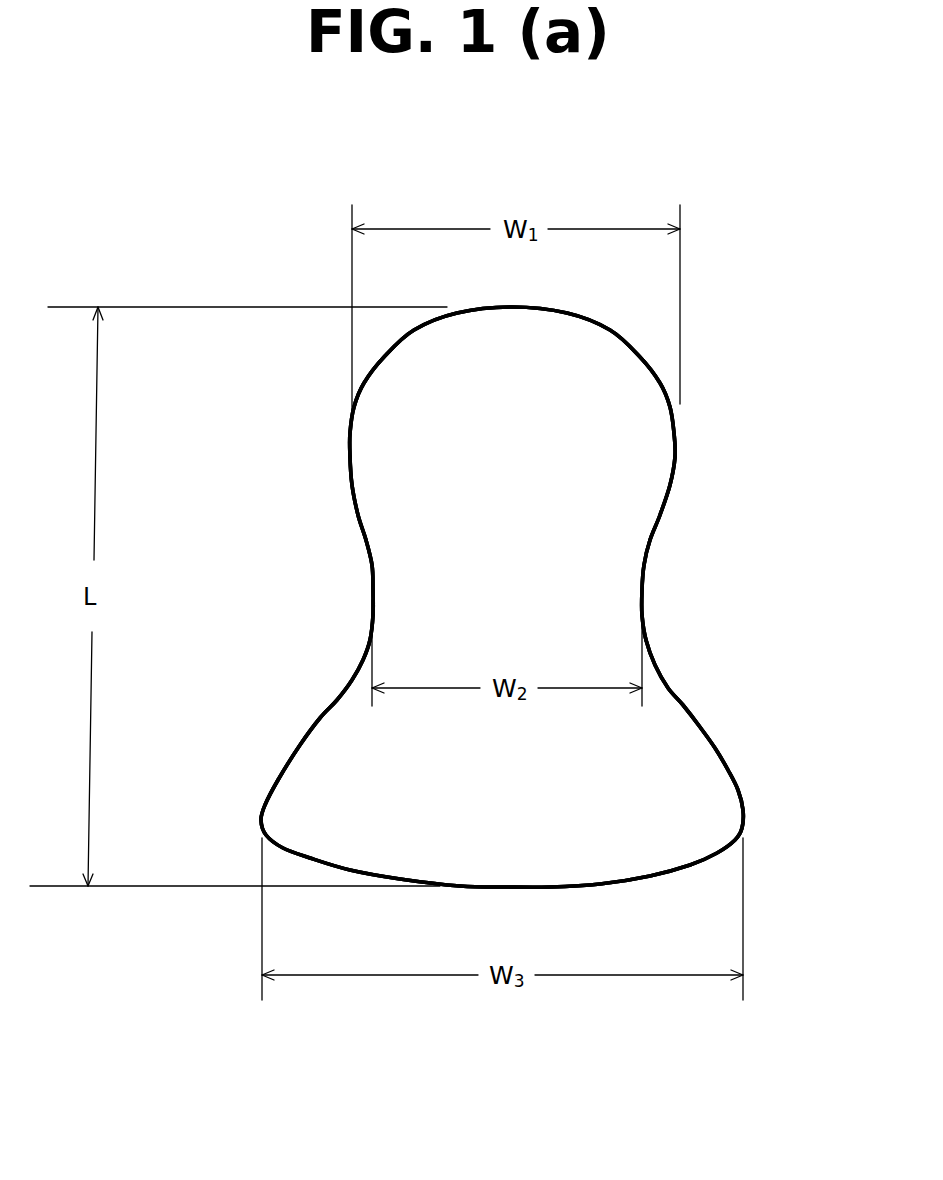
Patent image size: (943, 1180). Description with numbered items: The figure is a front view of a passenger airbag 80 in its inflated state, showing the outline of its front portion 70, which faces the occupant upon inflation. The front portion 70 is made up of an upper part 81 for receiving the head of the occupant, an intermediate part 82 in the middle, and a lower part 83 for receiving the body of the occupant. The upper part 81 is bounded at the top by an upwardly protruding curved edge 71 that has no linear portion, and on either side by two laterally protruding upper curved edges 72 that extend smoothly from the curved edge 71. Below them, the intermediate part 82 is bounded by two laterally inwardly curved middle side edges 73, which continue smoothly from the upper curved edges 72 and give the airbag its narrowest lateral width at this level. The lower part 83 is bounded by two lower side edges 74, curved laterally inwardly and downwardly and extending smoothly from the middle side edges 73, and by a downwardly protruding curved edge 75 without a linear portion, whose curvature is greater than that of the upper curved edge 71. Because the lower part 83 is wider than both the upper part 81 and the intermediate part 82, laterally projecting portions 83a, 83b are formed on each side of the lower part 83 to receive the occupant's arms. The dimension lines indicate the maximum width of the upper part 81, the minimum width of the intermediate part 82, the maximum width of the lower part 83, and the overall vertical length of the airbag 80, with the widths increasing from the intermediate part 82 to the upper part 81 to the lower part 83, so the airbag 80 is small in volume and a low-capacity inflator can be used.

The front portion 70 is at (766, 368).
The upwardly protruding curved edge 71 is at (568, 312).
The laterally protruding upper curved edges 72 is at (697, 410).
The middle side edges 73 is at (372, 573).
The lower side edges 74 is at (300, 747).
The downwardly protruding curved edge 75 is at (578, 887).
The passenger airbag 80 is at (716, 325).
The upper part 81 is at (716, 452).
The intermediate part 82 is at (663, 572).
The lower part 83 is at (773, 800).
The laterally projecting portion 83a is at (285, 795).
The laterally projecting portion 83b is at (705, 795).